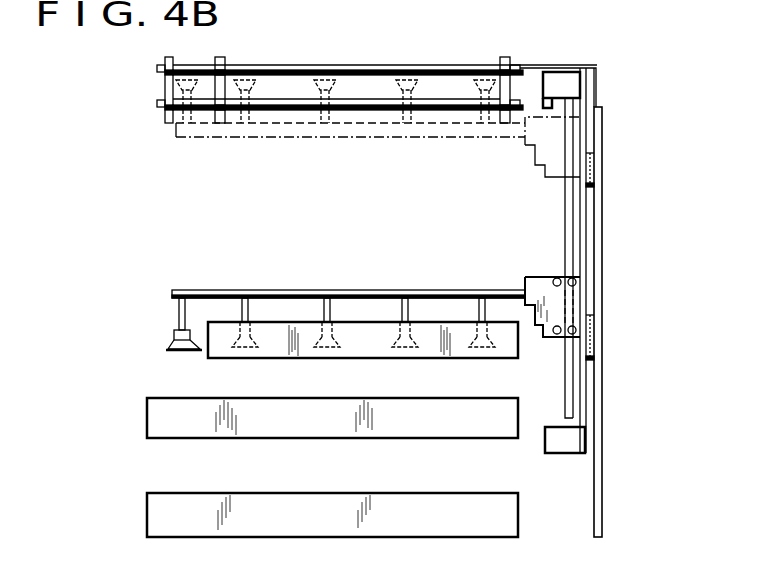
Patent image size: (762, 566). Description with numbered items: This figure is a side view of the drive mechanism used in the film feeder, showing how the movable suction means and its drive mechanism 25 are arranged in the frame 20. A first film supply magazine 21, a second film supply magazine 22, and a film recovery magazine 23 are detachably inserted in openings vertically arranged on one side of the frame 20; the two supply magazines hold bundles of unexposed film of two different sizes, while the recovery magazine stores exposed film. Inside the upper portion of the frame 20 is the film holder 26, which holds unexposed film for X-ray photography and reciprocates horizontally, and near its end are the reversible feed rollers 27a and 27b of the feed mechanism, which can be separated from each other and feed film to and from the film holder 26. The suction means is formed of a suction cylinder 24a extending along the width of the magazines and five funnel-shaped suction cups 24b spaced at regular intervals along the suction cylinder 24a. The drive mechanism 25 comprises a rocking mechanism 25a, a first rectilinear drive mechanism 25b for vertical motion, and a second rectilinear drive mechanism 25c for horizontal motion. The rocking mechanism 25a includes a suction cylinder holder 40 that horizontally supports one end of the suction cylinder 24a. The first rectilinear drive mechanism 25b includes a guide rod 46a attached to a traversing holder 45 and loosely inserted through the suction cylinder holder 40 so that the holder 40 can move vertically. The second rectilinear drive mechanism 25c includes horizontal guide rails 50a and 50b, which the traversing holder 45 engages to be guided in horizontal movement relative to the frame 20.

The frame 20 is at (602, 500).
The first film supply magazine 21 is at (208, 352).
The second film supply magazine 22 is at (150, 418).
The film recovery magazine 23 is at (150, 513).
The suction cylinder 24a is at (230, 290).
The suction cups 24b is at (334, 308).
The drive mechanism 25 is at (615, 322).
The rocking mechanism 25a is at (547, 262).
The first rectilinear drive mechanism 25b is at (587, 293).
The second rectilinear drive mechanism 25c is at (589, 362).
The film holder 26 is at (338, 61).
The reversible feed roller 27a is at (170, 58).
The reversible feed roller 27b is at (168, 122).
The suction cylinder holder 40 is at (527, 277).
The traversing holder 45 is at (586, 438).
The guide rod 46a is at (571, 404).
The guide rail 50a is at (590, 157).
The guide rail 50b is at (592, 338).